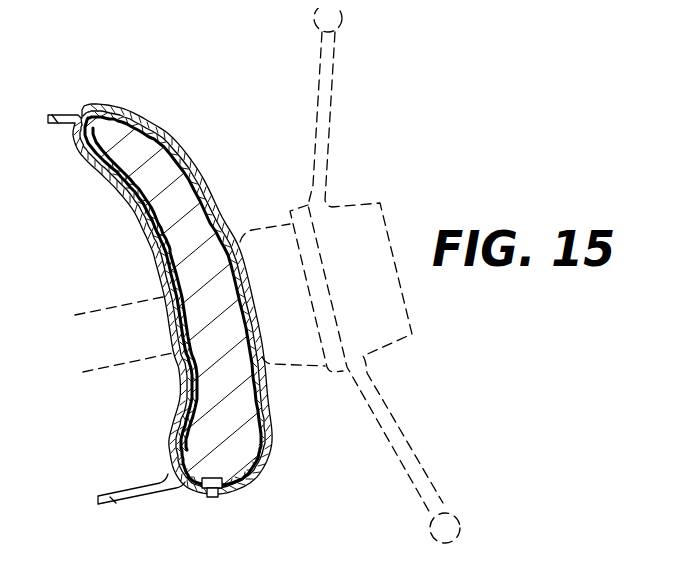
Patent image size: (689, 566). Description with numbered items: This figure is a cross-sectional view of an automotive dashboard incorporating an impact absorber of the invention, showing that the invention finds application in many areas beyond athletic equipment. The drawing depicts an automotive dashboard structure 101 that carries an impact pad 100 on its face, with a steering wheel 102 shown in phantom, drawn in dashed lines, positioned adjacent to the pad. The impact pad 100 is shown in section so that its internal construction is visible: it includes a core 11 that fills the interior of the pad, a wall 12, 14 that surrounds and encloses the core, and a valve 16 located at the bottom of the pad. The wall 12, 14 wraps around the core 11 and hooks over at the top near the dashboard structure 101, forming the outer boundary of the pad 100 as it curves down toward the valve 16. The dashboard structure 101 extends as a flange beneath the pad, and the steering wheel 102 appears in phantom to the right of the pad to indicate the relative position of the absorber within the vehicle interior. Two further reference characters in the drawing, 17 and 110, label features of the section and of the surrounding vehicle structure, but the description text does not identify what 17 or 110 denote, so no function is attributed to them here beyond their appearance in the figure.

The impact pad 100 is at (148, 242).
The automotive dashboard structure 101 is at (123, 500).
The steering wheel 102 is at (360, 203).
The core 11 is at (237, 455).
The wall 12 is at (270, 447).
The wall 14 is at (97, 104).
The valve 16 is at (213, 498).
The skin layer 17 is at (263, 413).
The vehicle body 110 is at (554, 562).